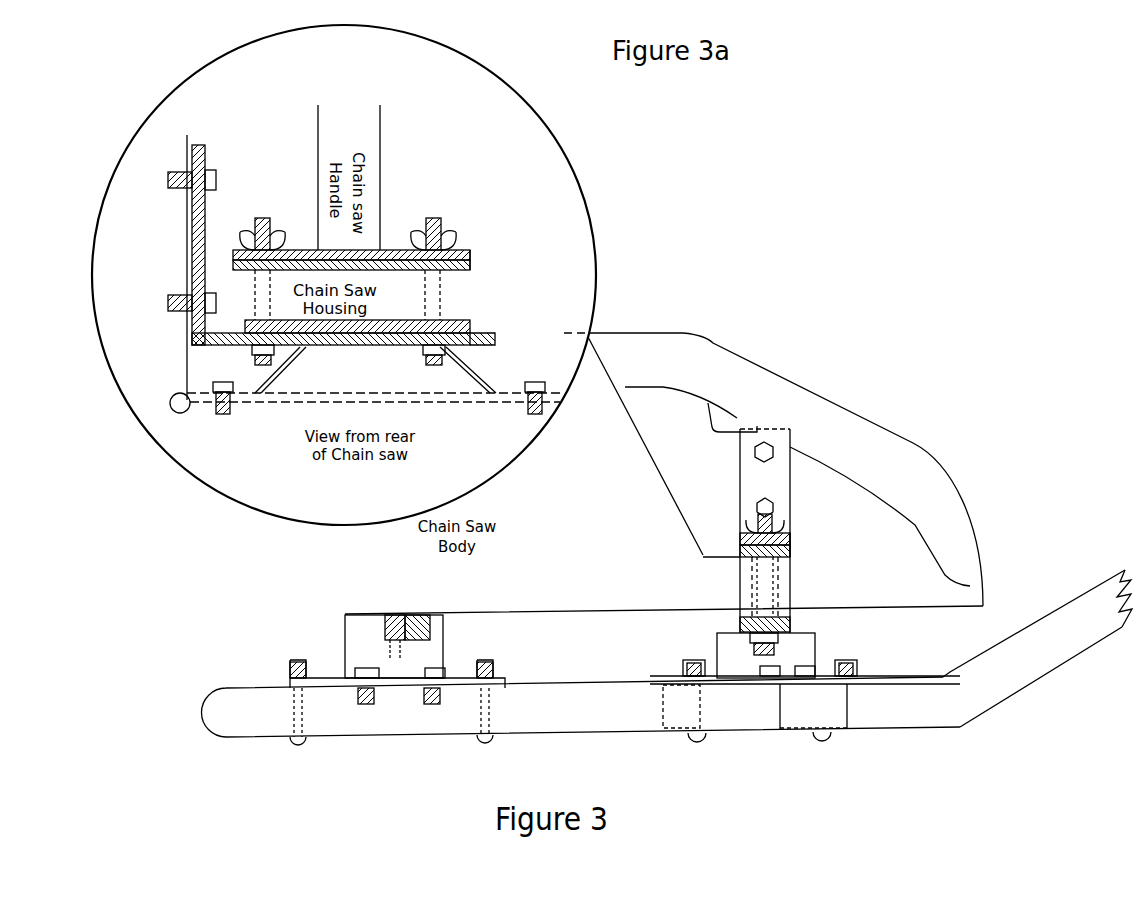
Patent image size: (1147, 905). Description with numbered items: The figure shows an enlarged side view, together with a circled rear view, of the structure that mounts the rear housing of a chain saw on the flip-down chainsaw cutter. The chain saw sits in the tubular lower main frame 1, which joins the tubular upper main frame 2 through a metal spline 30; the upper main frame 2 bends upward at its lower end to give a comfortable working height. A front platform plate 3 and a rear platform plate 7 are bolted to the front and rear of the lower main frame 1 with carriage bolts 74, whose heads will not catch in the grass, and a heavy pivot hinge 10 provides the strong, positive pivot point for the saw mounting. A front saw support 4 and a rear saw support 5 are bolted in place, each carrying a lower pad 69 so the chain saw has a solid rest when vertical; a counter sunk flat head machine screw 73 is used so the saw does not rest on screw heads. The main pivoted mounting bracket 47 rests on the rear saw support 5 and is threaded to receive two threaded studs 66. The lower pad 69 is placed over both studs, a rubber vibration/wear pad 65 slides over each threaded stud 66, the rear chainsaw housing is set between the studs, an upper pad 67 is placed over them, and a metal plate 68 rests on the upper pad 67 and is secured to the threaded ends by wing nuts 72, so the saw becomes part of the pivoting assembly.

In FIG. 3, the lower main frame 1 is at (272, 703).
In FIG. 3, the upper main frame 2 is at (1050, 655).
In FIG. 3, the front platform plate 3 is at (345, 678).
In FIG. 3, the front saw support 4 is at (367, 655).
In FIG. 3A, the rear saw support 5 is at (477, 363).
In FIG. 3, the rear saw support 5 is at (735, 662).
In FIG. 3, the rear platform plate 7 is at (666, 675).
In FIG. 3A, the pivot hinge 10 is at (172, 392).
In FIG. 3, the spline 30 is at (677, 712).
In FIG. 3A, the main pivoted mounting bracket 47 is at (200, 275).
In FIG. 3, the main pivoted mounting bracket 47 is at (877, 518).
In FIG. 3A, the rubber vibration/wear pad 65 is at (482, 285).
In FIG. 3, the rubber vibration/wear pad 65 is at (791, 615).
In FIG. 3A, the threaded stud 66 is at (442, 276).
In FIG. 3, the threaded stud 66 is at (768, 590).
In FIG. 3A, the upper pad 67 is at (470, 262).
In FIG. 3, the upper pad 67 is at (792, 540).
In FIG. 3A, the metal plate 68 is at (448, 268).
In FIG. 3, the metal plate 68 is at (913, 553).
In FIG. 3A, the lower pad 69 is at (472, 323).
In FIG. 3, the lower pad 69 is at (420, 622).
In FIG. 3A, the wing nuts 72 is at (258, 238).
In FIG. 3, the counter sunk flat head machine screw 73 is at (387, 620).
In FIG. 3, the carriage bolts 74 is at (478, 740).